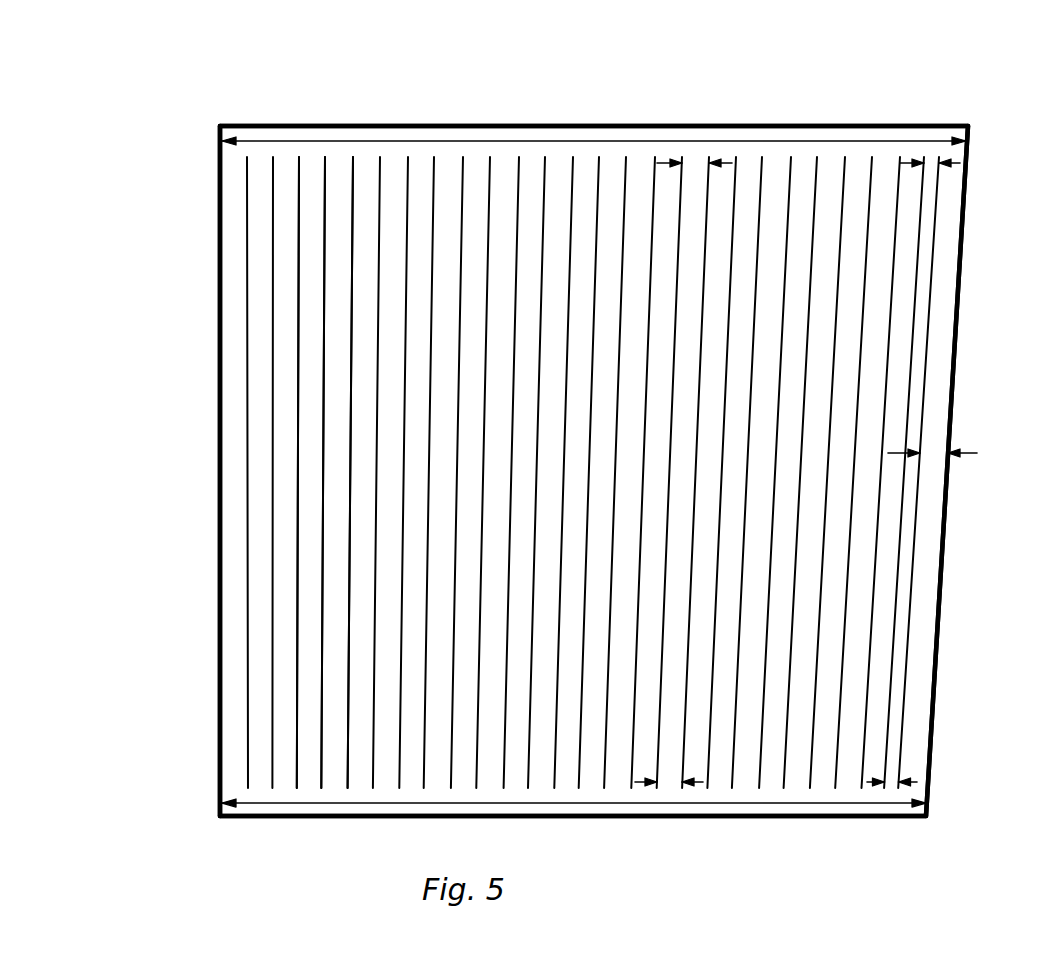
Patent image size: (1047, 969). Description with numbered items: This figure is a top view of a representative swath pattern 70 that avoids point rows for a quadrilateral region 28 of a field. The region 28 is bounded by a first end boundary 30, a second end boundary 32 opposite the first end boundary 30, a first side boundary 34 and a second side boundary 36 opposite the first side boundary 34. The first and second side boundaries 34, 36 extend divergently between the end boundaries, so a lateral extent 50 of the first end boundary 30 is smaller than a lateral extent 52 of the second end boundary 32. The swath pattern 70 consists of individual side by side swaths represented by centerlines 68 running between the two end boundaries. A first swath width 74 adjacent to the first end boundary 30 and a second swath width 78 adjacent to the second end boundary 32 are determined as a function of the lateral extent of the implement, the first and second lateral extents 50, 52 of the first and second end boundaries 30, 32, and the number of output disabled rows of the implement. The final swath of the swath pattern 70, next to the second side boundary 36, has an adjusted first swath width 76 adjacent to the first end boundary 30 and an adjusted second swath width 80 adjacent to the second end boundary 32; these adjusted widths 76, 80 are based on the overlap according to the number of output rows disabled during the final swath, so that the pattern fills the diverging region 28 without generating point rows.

The quadrilateral region 28 is at (845, 86).
The first end boundary 30 is at (293, 818).
The second end boundary 32 is at (328, 124).
The first side boundary 34 is at (218, 519).
The second side boundary 36 is at (930, 453).
The lateral extent of first end boundary 50 is at (566, 806).
The lateral extent of second end boundary 52 is at (512, 141).
The centerlines 68 is at (350, 700).
The swath pattern 70 is at (347, 289).
The first swath width 74 is at (669, 782).
The adjusted first swath width 76 is at (888, 782).
The second swath width 78 is at (698, 163).
The adjusted second swath width 80 is at (935, 163).